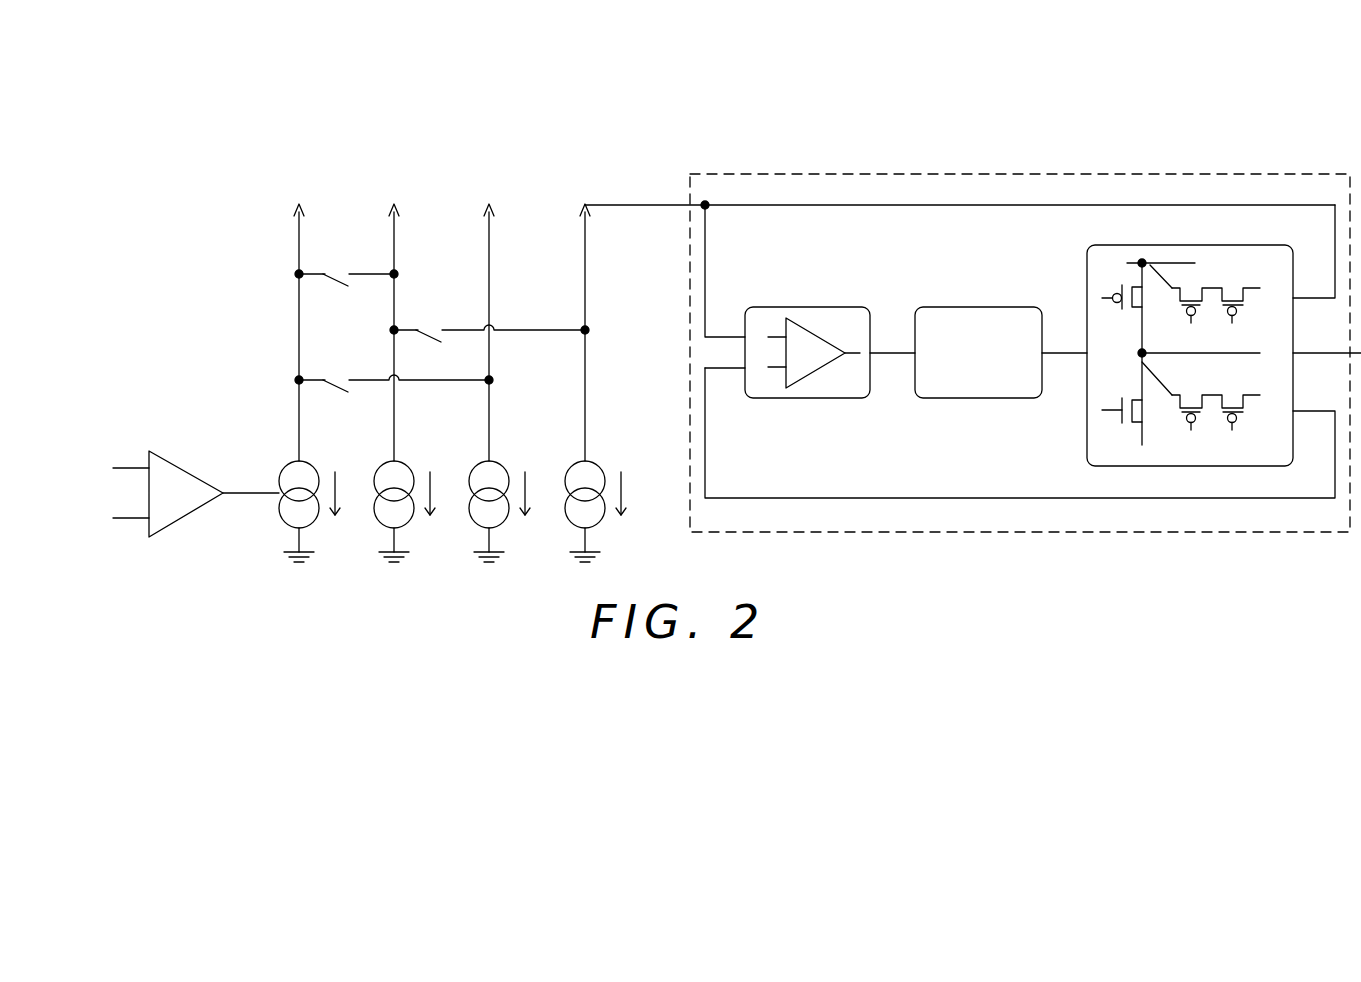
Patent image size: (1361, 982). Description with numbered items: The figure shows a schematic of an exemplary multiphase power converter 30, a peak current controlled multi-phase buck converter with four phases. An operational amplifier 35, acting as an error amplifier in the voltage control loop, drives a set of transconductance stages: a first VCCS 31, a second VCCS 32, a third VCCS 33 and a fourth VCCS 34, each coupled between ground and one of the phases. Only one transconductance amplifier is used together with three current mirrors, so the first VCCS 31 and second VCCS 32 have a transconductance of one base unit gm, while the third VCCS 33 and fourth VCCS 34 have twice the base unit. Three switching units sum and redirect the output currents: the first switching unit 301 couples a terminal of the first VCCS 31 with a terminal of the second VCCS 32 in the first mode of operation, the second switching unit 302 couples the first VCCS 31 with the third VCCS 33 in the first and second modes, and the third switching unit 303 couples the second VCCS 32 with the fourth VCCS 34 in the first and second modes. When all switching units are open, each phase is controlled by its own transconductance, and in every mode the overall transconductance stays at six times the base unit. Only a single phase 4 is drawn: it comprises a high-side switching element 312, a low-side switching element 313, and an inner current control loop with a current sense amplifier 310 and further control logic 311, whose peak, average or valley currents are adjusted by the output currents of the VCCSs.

The multiphase power converter 30 is at (240, 97).
The phase 4 is at (1213, 176).
The first switching unit 301 is at (334, 271).
The second switching unit 302 is at (334, 378).
The third switching unit 303 is at (429, 328).
The first VCCS 31 is at (281, 482).
The second VCCS 32 is at (376, 482).
The third VCCS 33 is at (471, 482).
The fourth VCCS 34 is at (567, 482).
The operational amplifier 35 is at (190, 474).
The current sense amplifier 310 is at (815, 306).
The control logic 311 is at (986, 306).
The high-side switching element 312 is at (1120, 284).
The low-side switching element 313 is at (1127, 427).